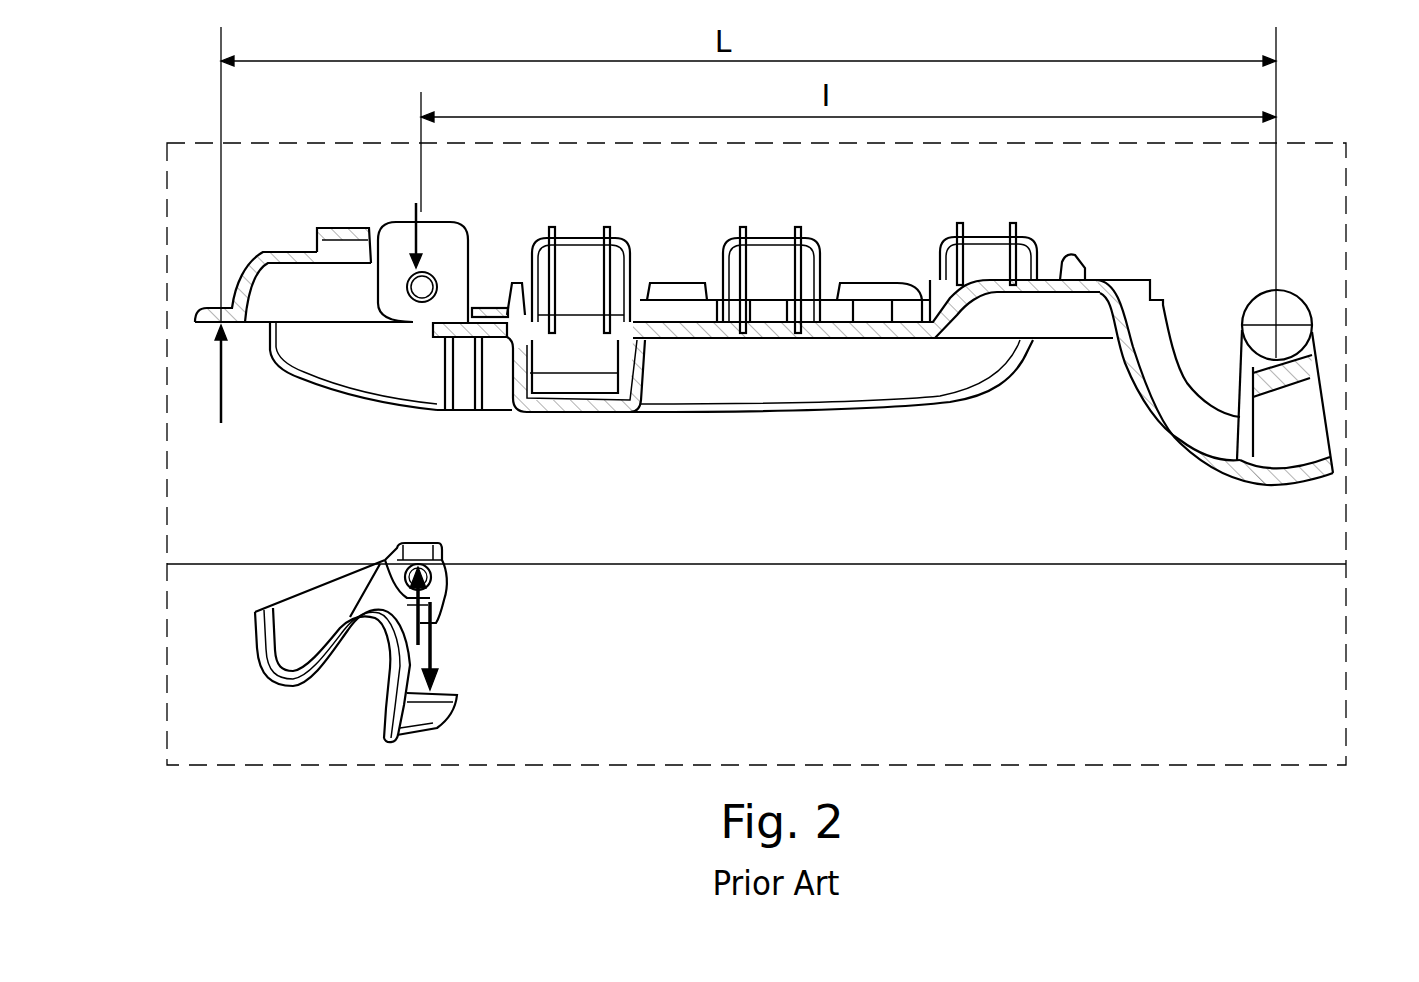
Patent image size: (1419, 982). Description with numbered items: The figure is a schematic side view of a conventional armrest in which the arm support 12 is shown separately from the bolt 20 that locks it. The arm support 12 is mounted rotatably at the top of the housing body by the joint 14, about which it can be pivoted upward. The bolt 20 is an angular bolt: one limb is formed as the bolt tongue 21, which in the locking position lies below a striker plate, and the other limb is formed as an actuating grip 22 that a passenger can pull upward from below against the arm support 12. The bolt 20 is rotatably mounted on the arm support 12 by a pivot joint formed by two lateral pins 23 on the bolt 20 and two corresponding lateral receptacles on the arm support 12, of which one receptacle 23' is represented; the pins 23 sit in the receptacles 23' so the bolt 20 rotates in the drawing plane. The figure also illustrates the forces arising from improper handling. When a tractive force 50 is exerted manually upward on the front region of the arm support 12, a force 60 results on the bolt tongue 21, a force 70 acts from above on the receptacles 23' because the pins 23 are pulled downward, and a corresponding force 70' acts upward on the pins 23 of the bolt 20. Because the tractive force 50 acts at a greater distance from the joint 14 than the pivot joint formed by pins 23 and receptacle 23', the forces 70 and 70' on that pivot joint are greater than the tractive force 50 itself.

The arm support 12 is at (815, 425).
The joint 14 is at (1292, 312).
The bolt 20 is at (357, 628).
The bolt tongue 21 is at (427, 710).
The actuating grip 22 is at (283, 688).
The pins 23 is at (457, 562).
The receptacle 23' is at (454, 235).
The tractive force 50 is at (222, 388).
The force on bolt tongue 60 is at (432, 655).
The force on receptacles 70 is at (390, 245).
The force on pins 70' is at (327, 558).